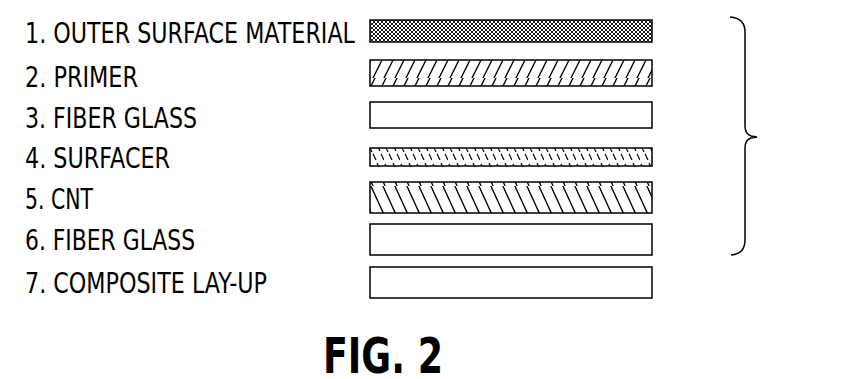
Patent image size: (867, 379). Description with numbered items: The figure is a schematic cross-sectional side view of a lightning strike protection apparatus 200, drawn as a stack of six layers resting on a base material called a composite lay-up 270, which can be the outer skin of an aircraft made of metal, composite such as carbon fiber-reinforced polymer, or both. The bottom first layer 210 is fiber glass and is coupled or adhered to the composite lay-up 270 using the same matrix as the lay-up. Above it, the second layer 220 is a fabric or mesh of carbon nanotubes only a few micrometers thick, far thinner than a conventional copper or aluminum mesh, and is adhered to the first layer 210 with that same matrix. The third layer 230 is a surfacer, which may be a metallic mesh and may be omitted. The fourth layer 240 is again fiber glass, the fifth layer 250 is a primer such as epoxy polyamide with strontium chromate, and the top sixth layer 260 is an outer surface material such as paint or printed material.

The lightning strike protection apparatus 200 is at (763, 136).
The first layer 210 is at (653, 237).
The second layer 220 is at (653, 198).
The third layer 230 is at (653, 157).
The fourth layer 240 is at (653, 115).
The fifth layer 250 is at (653, 72).
The sixth layer 260 is at (653, 31).
The composite lay-up 270 is at (653, 284).